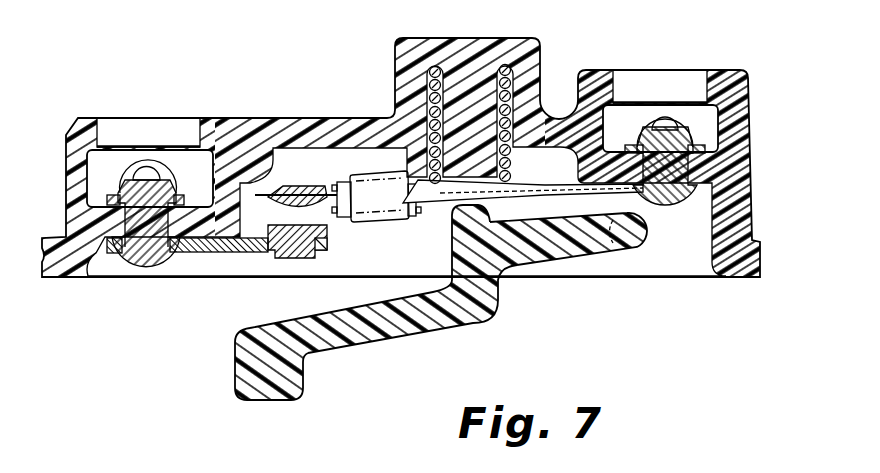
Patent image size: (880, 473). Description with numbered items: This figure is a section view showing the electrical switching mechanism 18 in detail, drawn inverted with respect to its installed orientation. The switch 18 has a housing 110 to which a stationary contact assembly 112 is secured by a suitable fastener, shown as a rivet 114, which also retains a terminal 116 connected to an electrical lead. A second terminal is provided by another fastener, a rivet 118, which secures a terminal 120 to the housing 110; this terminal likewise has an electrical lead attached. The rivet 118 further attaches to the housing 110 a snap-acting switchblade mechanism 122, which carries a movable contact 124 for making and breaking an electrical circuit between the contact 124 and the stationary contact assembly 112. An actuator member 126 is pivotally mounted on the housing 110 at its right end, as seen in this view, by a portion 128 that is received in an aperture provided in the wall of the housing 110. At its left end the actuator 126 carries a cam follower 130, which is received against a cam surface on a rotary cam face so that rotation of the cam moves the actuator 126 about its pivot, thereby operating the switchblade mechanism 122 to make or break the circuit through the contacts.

The electrical switching mechanism 18 is at (182, 108).
The housing 110 is at (440, 236).
The stationary contact assembly 112 is at (250, 260).
The rivet 114 is at (117, 258).
The terminal 116 is at (110, 193).
The rivet 118 is at (662, 204).
The terminal 120 is at (707, 148).
The snap-acting switchblade mechanism 122 is at (535, 165).
The movable contact 124 is at (258, 190).
The actuator member 126 is at (376, 341).
The portion 128 is at (642, 238).
The cam follower 130 is at (285, 398).